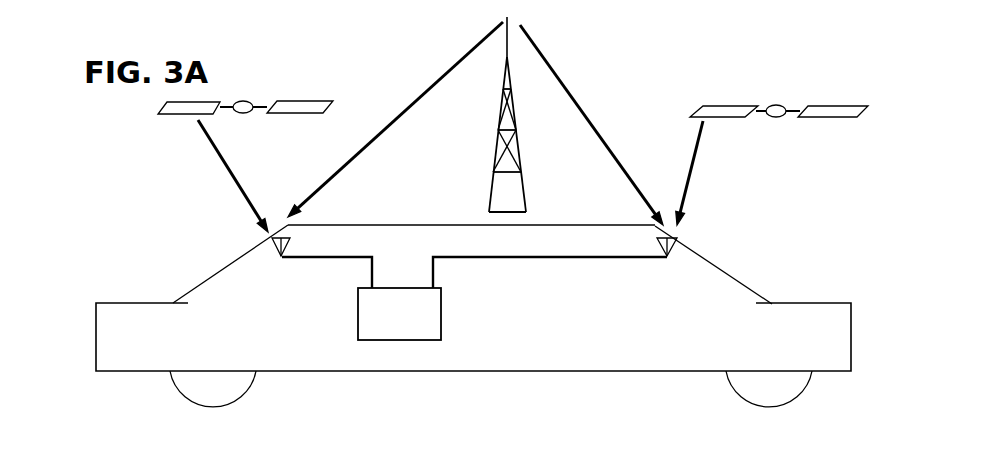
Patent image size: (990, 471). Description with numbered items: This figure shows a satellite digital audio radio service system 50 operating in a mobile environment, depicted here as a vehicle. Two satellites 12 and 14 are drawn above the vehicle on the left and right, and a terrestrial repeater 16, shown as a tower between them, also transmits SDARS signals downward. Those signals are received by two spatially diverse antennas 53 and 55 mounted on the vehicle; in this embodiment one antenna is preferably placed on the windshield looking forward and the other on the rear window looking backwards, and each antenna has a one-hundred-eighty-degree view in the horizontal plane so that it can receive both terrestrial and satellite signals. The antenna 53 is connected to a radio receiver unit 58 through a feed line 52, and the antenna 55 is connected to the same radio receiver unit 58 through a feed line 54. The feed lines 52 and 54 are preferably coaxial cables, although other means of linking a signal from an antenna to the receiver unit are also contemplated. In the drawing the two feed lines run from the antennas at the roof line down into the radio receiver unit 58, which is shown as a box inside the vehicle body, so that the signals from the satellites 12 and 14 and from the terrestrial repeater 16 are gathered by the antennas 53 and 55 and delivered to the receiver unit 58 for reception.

The satellite 12 is at (293, 100).
The satellite 14 is at (880, 110).
The terrestrial repeater 16 is at (497, 100).
The system 50 is at (193, 188).
The feed line 52 is at (335, 257).
The antenna 53 is at (278, 258).
The feed line 54 is at (531, 239).
The antenna 55 is at (677, 241).
The radio receiver unit 58 is at (441, 313).